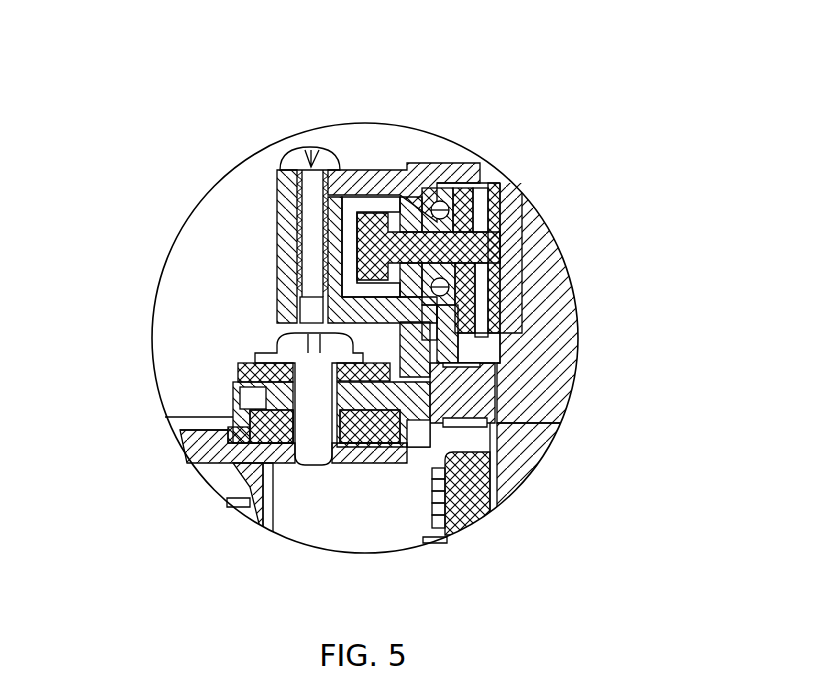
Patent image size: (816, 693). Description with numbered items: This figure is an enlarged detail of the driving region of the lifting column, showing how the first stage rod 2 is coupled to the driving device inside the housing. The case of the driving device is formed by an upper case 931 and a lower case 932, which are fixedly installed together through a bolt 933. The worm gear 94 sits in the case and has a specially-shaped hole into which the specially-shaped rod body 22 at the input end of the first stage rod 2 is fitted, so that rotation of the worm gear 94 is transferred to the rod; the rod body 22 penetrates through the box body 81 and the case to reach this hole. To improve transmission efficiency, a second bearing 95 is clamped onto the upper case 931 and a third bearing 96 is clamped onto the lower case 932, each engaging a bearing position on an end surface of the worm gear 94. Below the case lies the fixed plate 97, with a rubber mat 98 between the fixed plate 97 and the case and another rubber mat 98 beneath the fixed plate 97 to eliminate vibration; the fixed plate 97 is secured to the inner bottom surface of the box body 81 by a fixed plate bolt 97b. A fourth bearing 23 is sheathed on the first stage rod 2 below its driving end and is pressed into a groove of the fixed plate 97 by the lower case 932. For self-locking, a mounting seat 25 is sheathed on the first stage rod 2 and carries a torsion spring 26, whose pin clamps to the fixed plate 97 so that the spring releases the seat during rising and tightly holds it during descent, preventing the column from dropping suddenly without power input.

The first stage rod 2 is at (525, 470).
The specially-shaped rod body 22 is at (555, 248).
The fourth bearing 23 is at (495, 388).
The mounting seat 25 is at (465, 517).
The torsion spring 26 is at (435, 500).
The box body 81 is at (195, 452).
The worm gear 94 is at (523, 200).
The second bearing 95 is at (482, 188).
The third bearing 96 is at (470, 292).
The fixed plate 97 is at (237, 397).
The fixed plate bolt 97b is at (280, 338).
The rubber mat 98 is at (240, 372).
The upper case 931 is at (402, 163).
The lower case 932 is at (278, 255).
The bolt 933 is at (283, 155).